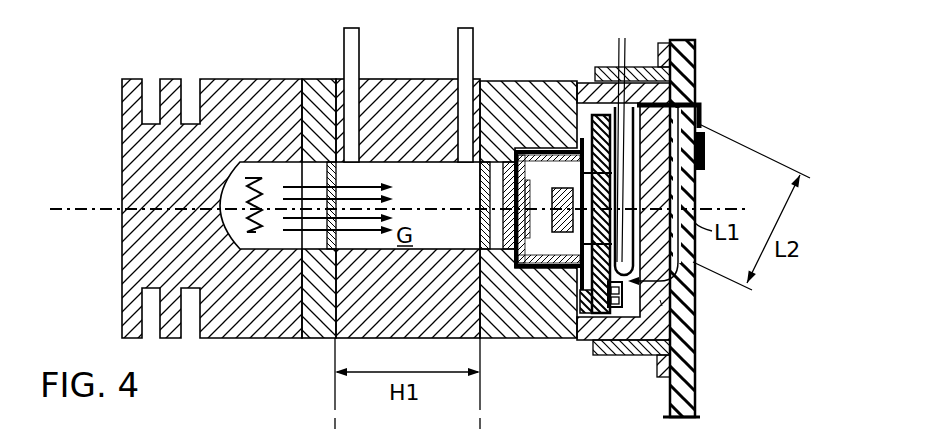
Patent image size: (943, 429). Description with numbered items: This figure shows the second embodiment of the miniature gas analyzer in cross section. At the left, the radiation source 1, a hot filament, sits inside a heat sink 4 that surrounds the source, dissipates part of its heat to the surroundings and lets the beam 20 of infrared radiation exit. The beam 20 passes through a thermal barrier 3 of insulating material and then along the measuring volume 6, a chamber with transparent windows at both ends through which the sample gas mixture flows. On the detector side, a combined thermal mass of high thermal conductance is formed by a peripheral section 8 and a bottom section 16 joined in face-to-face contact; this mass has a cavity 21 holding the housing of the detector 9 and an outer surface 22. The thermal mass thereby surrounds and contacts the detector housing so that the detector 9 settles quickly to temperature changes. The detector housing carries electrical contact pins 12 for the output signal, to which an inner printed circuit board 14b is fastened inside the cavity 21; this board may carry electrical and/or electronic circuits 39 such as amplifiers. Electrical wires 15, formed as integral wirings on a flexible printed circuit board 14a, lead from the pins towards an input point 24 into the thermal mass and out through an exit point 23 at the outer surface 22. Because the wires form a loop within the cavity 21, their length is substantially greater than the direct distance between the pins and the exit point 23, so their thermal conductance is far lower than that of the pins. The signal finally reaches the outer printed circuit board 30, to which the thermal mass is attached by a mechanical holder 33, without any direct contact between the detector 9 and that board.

The radiation source 1 is at (245, 195).
The thermal barrier 3 is at (317, 113).
The heat sink 4 is at (142, 185).
The measuring volume 6 is at (418, 193).
The peripheral section 8 is at (525, 112).
The detector 9 is at (563, 187).
The electrical contact pins 12 is at (633, 137).
The flexible printed circuit board 14a is at (695, 184).
The inner printed circuit board 14b is at (597, 115).
The electrical wires 15 is at (695, 184).
The bottom section 16 is at (660, 302).
The beam 20 is at (310, 220).
The cavity 21 is at (633, 300).
The outer surface 22 is at (497, 80).
The exit point 23 is at (673, 100).
The input point 24 is at (633, 105).
The outer printed circuit board 30 is at (690, 369).
The mechanical holder 33 is at (648, 64).
The electrical and/or electronic circuits 39 is at (603, 355).